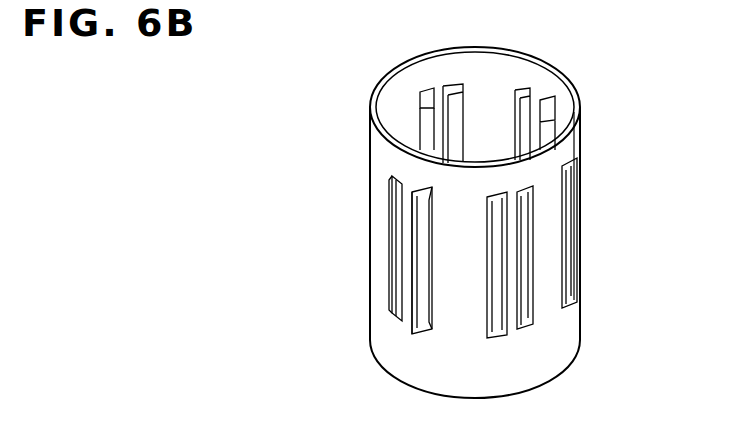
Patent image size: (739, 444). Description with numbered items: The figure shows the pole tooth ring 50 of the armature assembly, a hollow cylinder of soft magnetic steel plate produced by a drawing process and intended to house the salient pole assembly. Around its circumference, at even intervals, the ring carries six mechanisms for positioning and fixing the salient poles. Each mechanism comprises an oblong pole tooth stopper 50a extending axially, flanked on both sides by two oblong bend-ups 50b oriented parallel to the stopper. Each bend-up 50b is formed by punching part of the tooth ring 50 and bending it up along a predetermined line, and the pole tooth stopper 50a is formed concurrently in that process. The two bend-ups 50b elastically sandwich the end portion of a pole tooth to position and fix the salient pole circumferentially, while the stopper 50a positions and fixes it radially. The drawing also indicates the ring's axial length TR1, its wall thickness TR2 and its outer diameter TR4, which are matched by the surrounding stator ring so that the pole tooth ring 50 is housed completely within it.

The pole tooth ring 50 is at (612, 327).
The pole tooth stopper 50a is at (426, 92).
The bend-up 50b is at (458, 125).
The length of the pole tooth ring TR1 is at (342, 112).
The wall thickness of the tooth ring TR2 is at (600, 52).
The outer diameter of the pole tooth ring TR4 is at (578, 443).